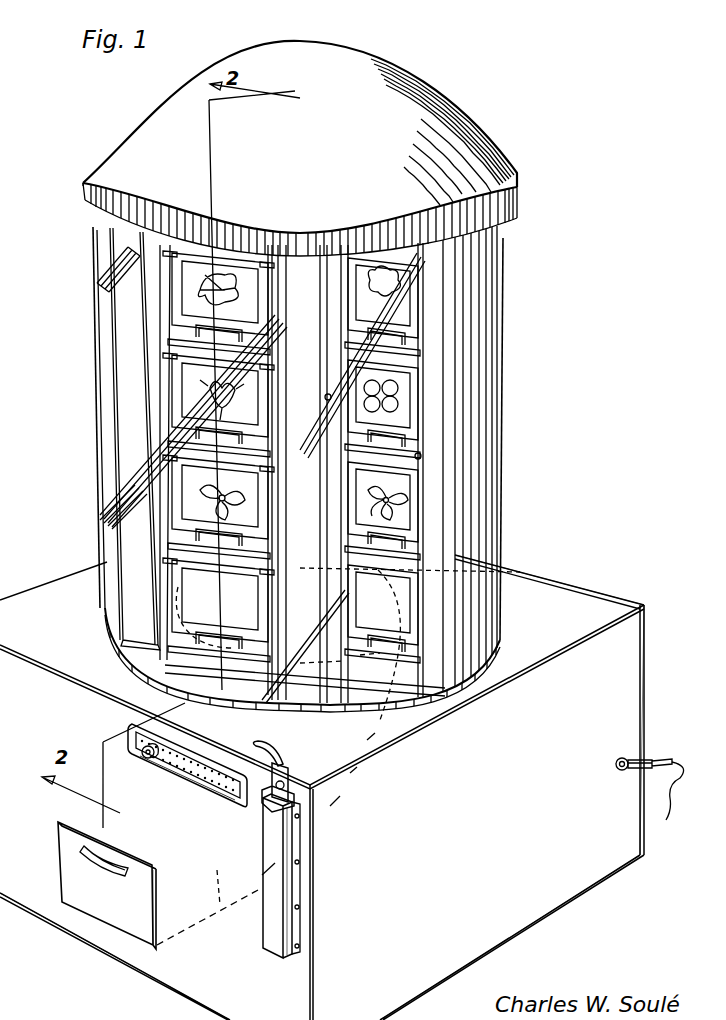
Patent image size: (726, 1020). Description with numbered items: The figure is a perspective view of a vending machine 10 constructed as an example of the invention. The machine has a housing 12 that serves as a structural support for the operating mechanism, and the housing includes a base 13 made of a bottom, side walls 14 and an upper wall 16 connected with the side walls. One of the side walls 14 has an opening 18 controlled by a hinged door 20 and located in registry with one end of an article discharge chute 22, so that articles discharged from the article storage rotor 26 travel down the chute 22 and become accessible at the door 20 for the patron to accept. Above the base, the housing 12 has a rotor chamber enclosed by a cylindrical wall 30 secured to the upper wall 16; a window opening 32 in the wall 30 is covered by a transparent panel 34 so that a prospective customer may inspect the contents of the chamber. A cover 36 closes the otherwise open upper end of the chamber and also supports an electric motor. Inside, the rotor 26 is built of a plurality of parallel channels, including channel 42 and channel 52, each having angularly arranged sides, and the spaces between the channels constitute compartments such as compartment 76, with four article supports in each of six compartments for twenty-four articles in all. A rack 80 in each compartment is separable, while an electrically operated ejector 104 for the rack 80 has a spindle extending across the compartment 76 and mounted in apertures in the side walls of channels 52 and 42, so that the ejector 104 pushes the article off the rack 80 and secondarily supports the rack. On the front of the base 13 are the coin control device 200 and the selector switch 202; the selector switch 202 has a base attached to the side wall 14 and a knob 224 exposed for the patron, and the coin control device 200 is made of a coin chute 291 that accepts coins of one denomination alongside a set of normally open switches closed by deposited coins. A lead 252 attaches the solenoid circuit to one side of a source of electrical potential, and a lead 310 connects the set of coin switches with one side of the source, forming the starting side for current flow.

The vending machine 10 is at (92, 143).
The housing 12 is at (541, 582).
The base 13 is at (620, 688).
The side walls 14 is at (583, 873).
The upper wall 16 is at (498, 683).
The opening 18 is at (155, 918).
The hinged door 20 is at (72, 842).
The article discharge chute 22 is at (220, 905).
The article storage rotor 26 is at (395, 342).
The cylindrical wall 30 is at (490, 462).
The window opening 32 is at (422, 455).
The transparent panel 34 is at (120, 398).
The cover 36 is at (411, 80).
The channel 42 is at (160, 290).
The channel 52 is at (284, 300).
The compartment 76 is at (254, 708).
The rack 80 is at (241, 718).
The ejector 104 is at (194, 590).
The coin control device 200 is at (275, 938).
The selector switch 202 is at (200, 790).
The knob 224 is at (151, 758).
The lead 252 is at (662, 792).
The coin chute 291 is at (268, 806).
The lead 310 is at (658, 760).